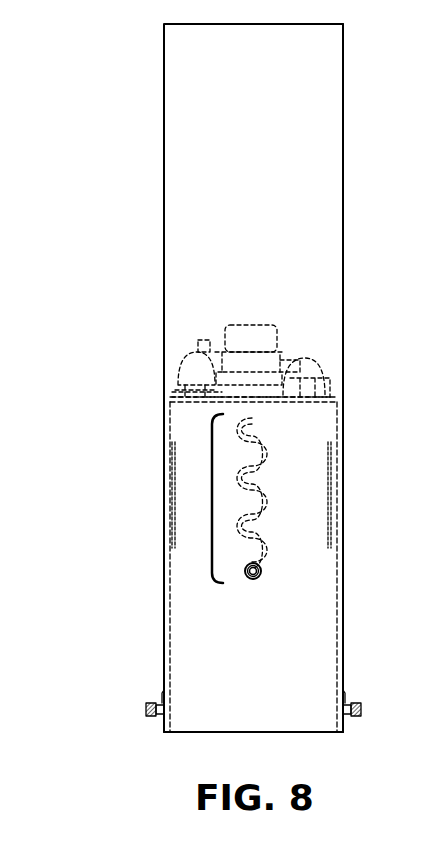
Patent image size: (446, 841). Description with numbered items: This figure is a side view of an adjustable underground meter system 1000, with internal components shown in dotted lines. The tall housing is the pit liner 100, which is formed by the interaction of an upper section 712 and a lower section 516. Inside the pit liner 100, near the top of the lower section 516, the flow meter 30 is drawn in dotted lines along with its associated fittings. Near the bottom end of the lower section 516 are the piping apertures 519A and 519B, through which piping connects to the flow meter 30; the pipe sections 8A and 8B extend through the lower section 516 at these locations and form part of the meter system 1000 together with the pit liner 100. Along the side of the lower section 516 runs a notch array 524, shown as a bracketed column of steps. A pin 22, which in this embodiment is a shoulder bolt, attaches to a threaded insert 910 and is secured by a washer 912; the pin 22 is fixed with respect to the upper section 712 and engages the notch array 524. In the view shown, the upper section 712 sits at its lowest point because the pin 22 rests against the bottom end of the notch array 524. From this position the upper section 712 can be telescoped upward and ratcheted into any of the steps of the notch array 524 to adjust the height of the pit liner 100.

The adjustable underground meter system 1000 is at (102, 99).
The pit liner 100 is at (156, 216).
The upper section 712 is at (343, 173).
The flow meter 30 is at (315, 363).
The notch array 524 is at (207, 498).
The threaded insert 910 is at (250, 578).
The washer 912 is at (256, 580).
The pin 22 is at (262, 572).
The pipe section 8A is at (156, 719).
The piping aperture 519B is at (162, 718).
The lower section 516 is at (170, 735).
The pipe section 8B is at (348, 716).
The piping aperture 519A is at (347, 717).